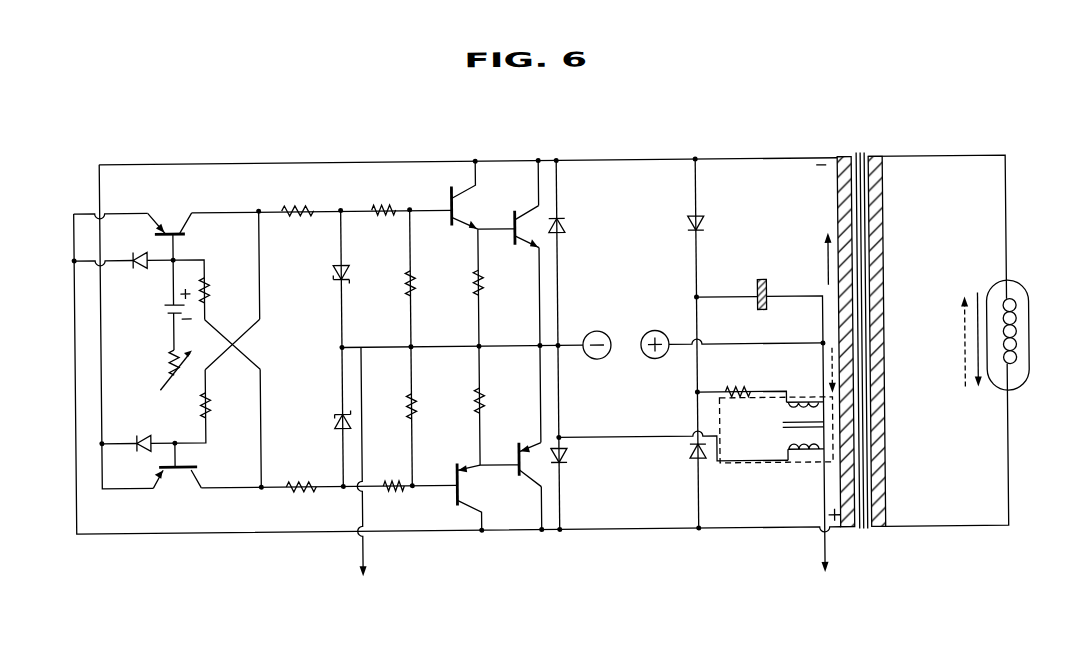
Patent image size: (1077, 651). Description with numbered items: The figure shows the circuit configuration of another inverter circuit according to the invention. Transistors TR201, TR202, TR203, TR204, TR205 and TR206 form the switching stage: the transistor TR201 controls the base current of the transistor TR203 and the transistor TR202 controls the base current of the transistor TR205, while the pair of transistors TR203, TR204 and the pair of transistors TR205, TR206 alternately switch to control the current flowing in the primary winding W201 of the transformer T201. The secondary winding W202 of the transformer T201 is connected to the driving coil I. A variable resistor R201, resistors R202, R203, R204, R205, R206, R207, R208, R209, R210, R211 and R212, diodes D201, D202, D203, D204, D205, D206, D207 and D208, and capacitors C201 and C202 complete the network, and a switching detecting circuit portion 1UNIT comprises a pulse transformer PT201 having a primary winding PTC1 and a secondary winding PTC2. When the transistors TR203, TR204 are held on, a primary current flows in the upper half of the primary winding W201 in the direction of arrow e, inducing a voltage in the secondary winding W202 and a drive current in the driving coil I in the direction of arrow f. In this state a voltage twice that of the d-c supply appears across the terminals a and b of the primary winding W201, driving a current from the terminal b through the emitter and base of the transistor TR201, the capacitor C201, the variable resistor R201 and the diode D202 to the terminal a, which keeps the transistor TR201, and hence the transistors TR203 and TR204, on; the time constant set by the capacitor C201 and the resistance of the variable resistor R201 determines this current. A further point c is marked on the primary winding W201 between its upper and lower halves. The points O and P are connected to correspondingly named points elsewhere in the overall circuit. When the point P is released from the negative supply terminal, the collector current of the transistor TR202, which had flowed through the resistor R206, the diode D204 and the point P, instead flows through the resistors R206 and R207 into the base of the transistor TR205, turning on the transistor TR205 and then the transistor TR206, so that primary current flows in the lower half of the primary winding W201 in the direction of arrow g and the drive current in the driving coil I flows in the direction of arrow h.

The transistor TR201 is at (177, 225).
The transistor TR202 is at (178, 487).
The transistor TR203 is at (463, 190).
The transistor TR204 is at (541, 220).
The transistor TR205 is at (469, 496).
The transistor TR206 is at (549, 474).
The variable resistor R201 is at (172, 366).
The resistor R202 is at (207, 276).
The resistor R203 is at (208, 420).
The resistor R204 is at (300, 209).
The resistor R205 is at (378, 217).
The resistor R206 is at (299, 481).
The resistor R207 is at (383, 486).
The resistor R208 is at (408, 294).
The resistor R209 is at (419, 412).
The resistor R210 is at (473, 284).
The resistor R211 is at (474, 404).
The resistor R212 is at (740, 392).
The diode D201 is at (139, 266).
The diode D202 is at (144, 431).
The diode D203 is at (336, 278).
The diode D204 is at (338, 424).
The diode D205 is at (568, 232).
The diode D206 is at (565, 456).
The diode D207 is at (706, 224).
The diode D208 is at (692, 462).
The capacitor C201 is at (169, 311).
The capacitor C202 is at (757, 290).
The pulse transformer PT201 is at (776, 433).
The primary winding of the pulse transformer PTC1 is at (803, 405).
The secondary winding of the pulse transformer PTC2 is at (803, 452).
The switching detecting circuit portion 1UNIT is at (735, 466).
The transformer T201 is at (864, 315).
The primary winding W201 is at (845, 193).
The secondary winding W202 is at (884, 186).
The driving coil I is at (1030, 319).
The terminal a is at (839, 161).
The terminal b is at (842, 532).
The terminal c is at (839, 332).
The arrow e is at (827, 264).
The arrow f is at (978, 297).
The arrow g is at (830, 358).
The arrow h is at (964, 344).
The point P is at (362, 478).
The point O is at (828, 585).